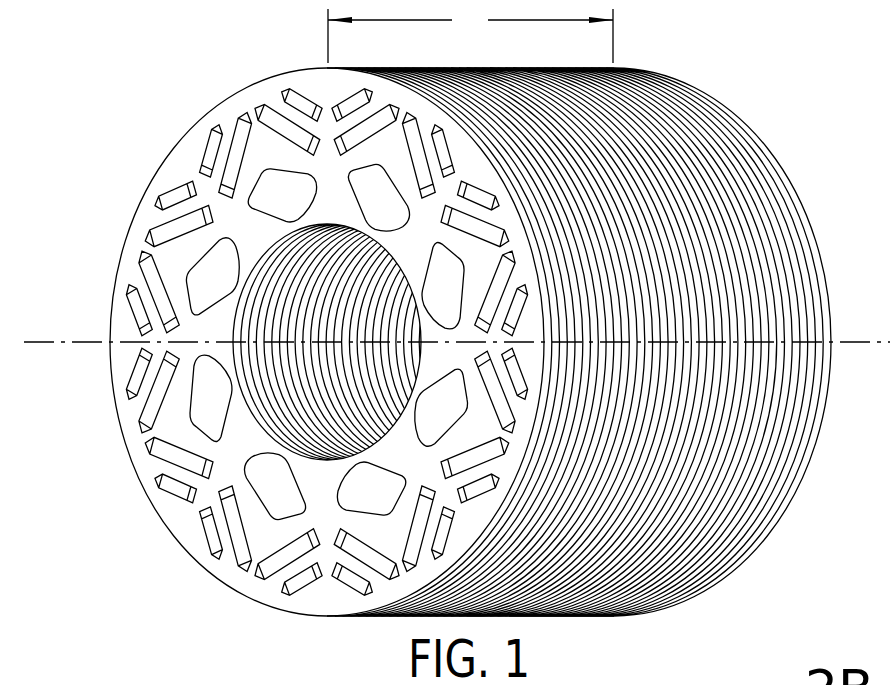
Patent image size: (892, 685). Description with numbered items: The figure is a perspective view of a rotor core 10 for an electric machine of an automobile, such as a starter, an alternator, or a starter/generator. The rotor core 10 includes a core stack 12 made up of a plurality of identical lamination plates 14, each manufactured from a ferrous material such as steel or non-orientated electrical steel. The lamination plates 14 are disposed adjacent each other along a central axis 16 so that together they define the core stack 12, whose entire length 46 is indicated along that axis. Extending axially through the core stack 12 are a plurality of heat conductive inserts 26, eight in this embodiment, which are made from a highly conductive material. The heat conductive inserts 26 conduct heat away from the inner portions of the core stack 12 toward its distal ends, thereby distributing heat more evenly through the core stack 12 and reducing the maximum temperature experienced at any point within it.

The rotor core 10 is at (198, 599).
The core stack 12 is at (703, 72).
The lamination plates 14 is at (733, 235).
The central axis 16 is at (79, 342).
The heat conductive inserts 26 is at (272, 202).
The entire length 46 is at (470, 34).